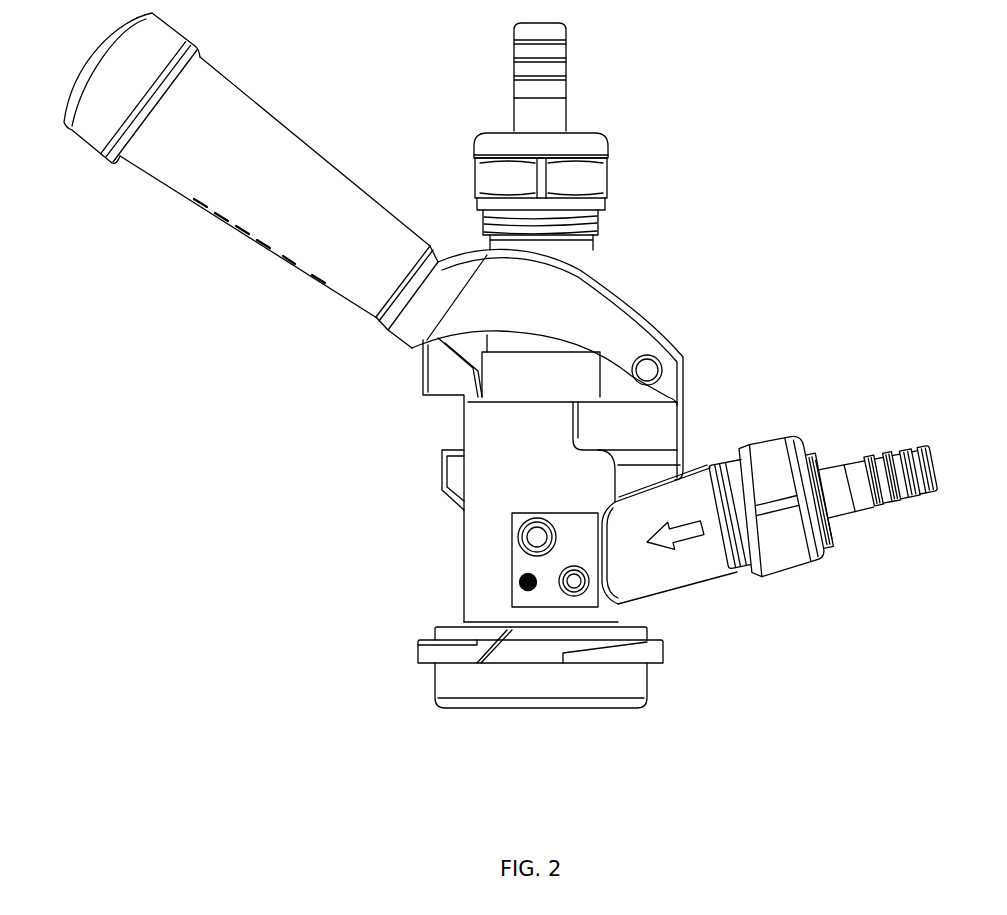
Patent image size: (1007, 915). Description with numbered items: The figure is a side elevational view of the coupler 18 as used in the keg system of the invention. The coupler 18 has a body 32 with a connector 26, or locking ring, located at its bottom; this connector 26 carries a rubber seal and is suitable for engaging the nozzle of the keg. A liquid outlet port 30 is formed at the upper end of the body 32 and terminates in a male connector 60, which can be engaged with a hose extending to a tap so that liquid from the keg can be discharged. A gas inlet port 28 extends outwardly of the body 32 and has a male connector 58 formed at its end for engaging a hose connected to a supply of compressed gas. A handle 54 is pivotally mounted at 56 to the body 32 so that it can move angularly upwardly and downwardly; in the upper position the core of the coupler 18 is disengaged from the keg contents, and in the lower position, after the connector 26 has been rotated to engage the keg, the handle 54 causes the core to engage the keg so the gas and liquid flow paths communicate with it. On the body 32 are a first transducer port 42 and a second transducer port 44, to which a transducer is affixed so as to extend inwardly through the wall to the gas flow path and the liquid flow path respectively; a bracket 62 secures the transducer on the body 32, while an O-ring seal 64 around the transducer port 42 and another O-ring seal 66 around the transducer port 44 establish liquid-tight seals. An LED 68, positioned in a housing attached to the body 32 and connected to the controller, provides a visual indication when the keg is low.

The coupler 18 is at (683, 423).
The connector 26 is at (640, 688).
The gas inlet port 28 is at (760, 462).
The liquid outlet port 30 is at (575, 188).
The body 32 is at (490, 548).
The first transducer port 42 is at (537, 533).
The second transducer port 44 is at (574, 581).
The handle 54 is at (223, 113).
The pivot mounting 56 is at (647, 367).
The male connector 58 is at (890, 462).
The male connector 60 is at (553, 68).
The bracket 62 is at (517, 510).
The O-ring seal 64 is at (552, 553).
The O-ring seal 66 is at (617, 612).
The LED 68 is at (520, 582).